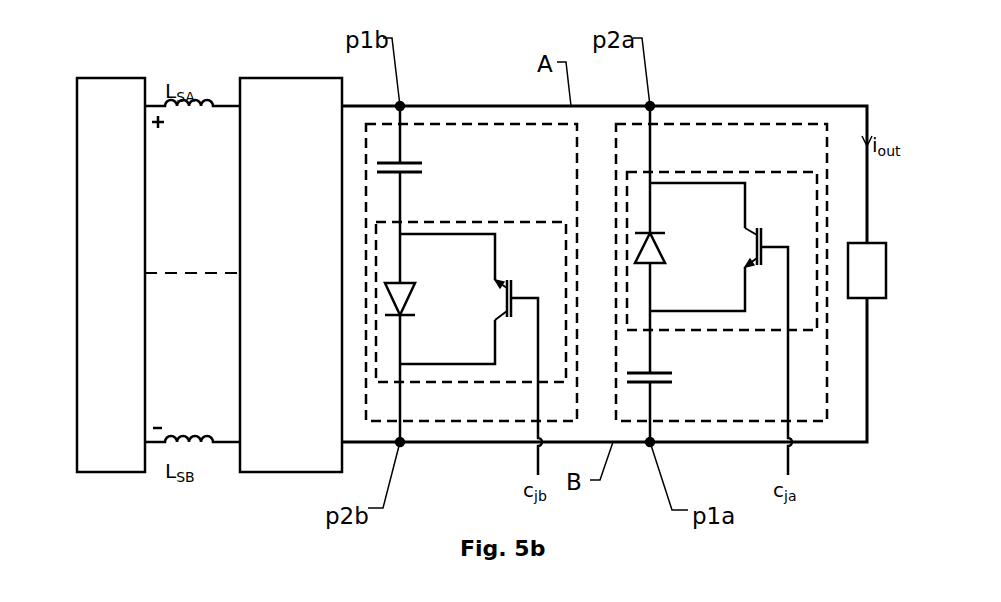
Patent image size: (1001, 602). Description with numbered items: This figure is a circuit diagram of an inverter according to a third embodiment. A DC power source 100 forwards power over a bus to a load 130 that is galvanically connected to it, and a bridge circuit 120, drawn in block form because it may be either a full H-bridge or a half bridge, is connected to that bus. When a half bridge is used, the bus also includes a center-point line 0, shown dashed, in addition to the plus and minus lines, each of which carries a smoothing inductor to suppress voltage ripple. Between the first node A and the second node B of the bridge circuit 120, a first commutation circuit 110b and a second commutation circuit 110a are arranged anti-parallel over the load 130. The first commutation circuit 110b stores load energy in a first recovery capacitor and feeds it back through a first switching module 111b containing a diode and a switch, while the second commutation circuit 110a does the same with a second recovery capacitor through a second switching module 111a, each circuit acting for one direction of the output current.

The DC power source 100 is at (137, 78).
The bridge circuit 120 is at (294, 78).
The second commutation circuit 110a is at (721, 257).
The first commutation circuit 110b is at (471, 257).
The second switching module 111a is at (722, 303).
The first switching module 111b is at (475, 222).
The load 130 is at (870, 243).
The center-point line 0 is at (194, 272).